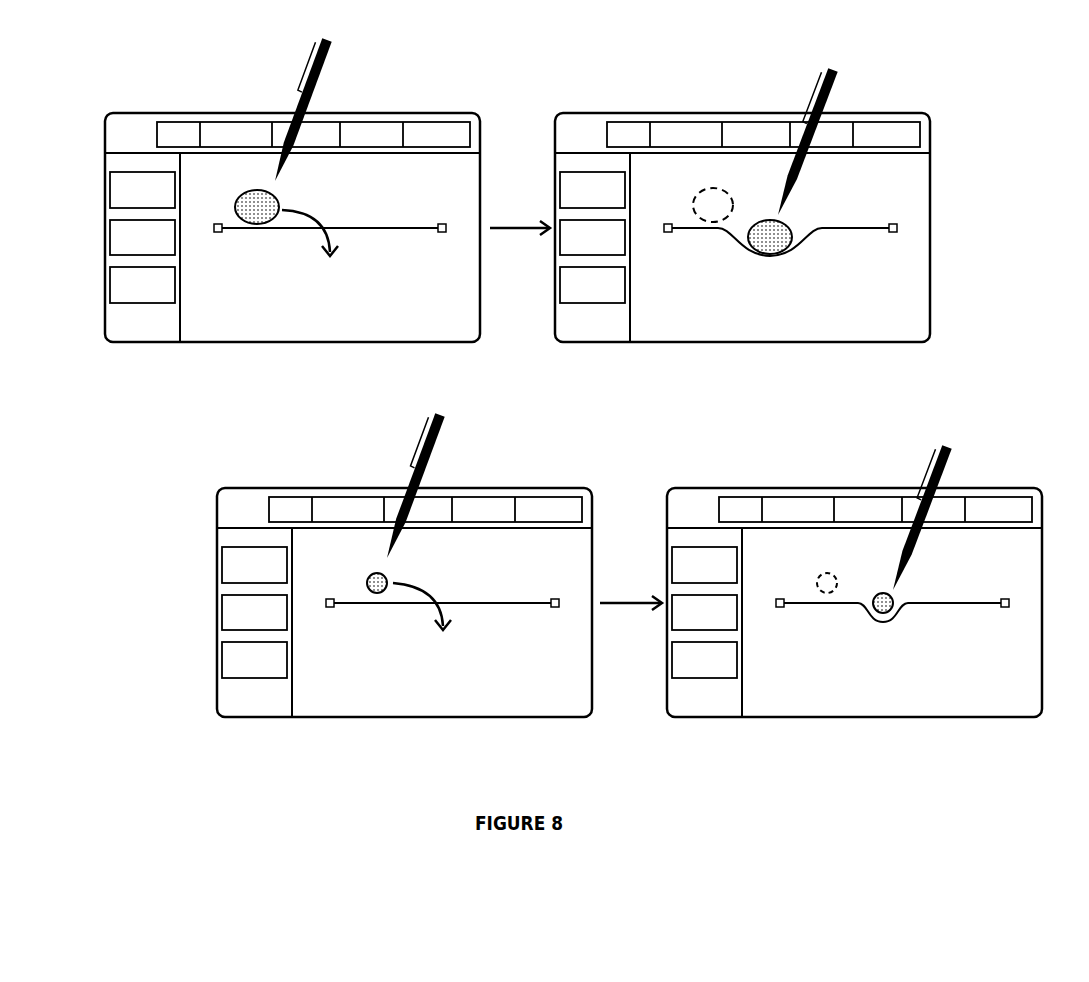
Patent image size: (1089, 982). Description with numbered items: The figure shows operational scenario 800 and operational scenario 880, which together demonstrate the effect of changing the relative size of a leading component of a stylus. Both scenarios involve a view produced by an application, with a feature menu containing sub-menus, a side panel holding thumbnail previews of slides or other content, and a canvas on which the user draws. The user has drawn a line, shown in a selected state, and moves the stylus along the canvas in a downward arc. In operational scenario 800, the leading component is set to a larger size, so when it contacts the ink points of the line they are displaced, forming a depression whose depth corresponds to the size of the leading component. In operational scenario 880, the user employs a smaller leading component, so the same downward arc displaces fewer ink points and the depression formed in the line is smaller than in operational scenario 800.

The operational scenario 800 is at (96, 71).
The operational scenario 880 is at (209, 446).